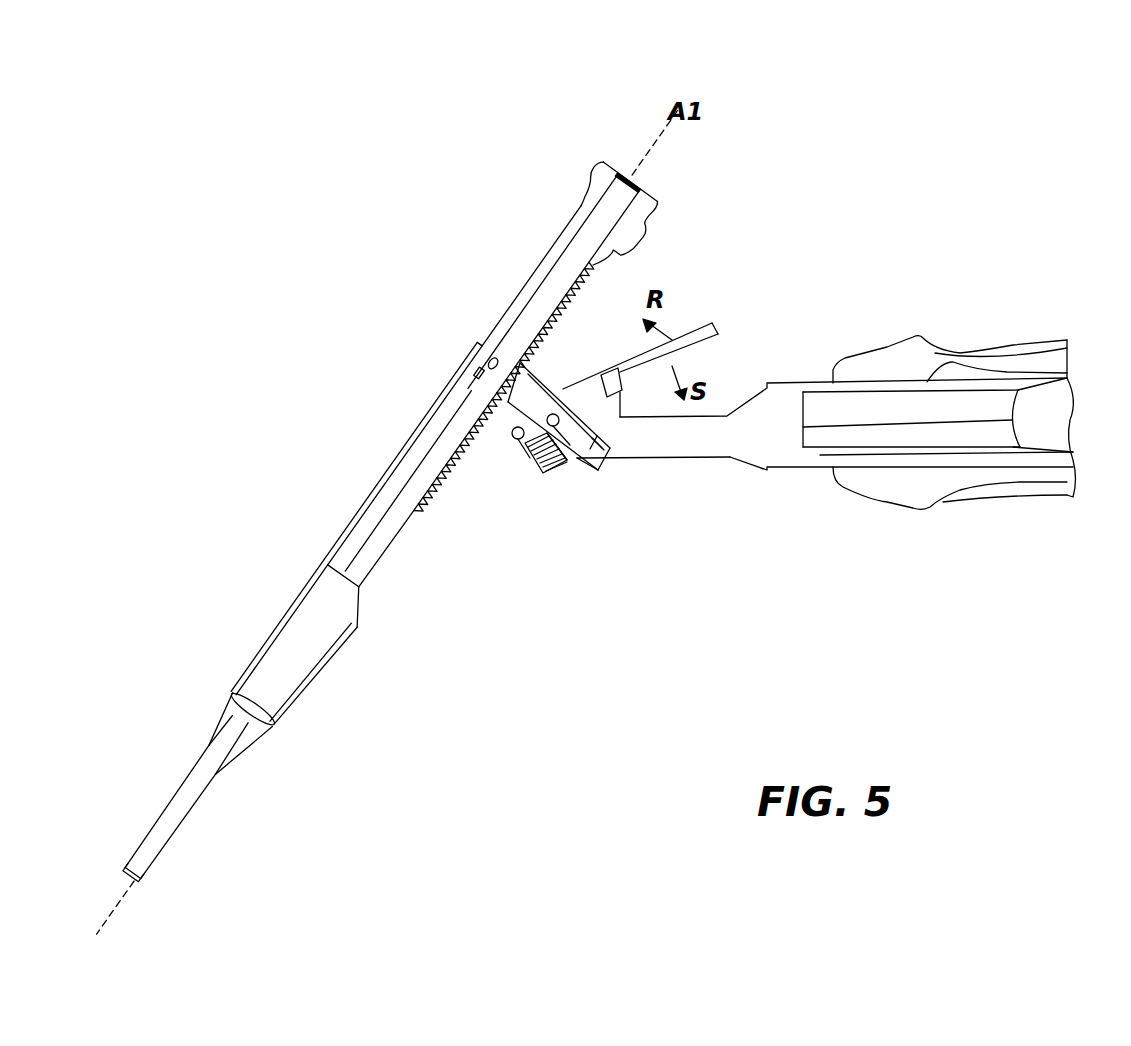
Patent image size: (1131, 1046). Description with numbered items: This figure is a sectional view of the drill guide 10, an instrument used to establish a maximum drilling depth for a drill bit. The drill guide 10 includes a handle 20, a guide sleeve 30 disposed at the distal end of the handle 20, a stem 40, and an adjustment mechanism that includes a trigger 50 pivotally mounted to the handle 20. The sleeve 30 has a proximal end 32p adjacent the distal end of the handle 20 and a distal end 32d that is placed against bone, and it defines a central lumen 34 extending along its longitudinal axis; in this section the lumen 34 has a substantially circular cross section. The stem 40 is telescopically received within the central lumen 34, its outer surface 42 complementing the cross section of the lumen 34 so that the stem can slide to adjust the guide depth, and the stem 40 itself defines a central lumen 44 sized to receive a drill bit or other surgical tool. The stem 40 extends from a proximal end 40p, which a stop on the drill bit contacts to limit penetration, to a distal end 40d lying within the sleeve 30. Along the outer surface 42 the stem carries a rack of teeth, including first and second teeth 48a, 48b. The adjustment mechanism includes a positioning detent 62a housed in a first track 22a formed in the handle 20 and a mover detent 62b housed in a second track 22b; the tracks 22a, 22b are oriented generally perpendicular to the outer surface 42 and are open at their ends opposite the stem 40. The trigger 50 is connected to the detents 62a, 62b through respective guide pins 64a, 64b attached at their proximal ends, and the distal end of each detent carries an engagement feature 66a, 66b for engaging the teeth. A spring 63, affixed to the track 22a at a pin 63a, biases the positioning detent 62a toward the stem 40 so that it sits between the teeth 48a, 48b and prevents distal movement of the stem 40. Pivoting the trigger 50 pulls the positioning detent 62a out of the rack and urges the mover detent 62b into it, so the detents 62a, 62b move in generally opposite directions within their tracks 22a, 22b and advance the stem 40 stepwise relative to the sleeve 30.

The drill guide 10 is at (315, 436).
The handle 20 is at (885, 365).
The first track 22a is at (565, 480).
The second track 22b is at (623, 457).
The guide sleeve 30 is at (225, 722).
The distal end of the sleeve 32d is at (155, 883).
The proximal end of the sleeve 32p is at (480, 345).
The central lumen 34 is at (325, 590).
The stem 40 is at (583, 203).
The proximal end of the stem 40p is at (612, 152).
The distal end of tube 40d is at (357, 623).
The outer surface 42 is at (543, 260).
The central lumen 44 is at (422, 460).
The first tooth 48a is at (480, 373).
The second tooth 48b is at (492, 362).
The trigger 50 is at (693, 323).
The positioning detent 62a is at (507, 453).
The mover detent 62b is at (580, 470).
The spring 63 is at (555, 470).
The pin 63a is at (558, 475).
The guide pin 64a is at (530, 437).
The guide pin 64b is at (592, 455).
The engagement feature 66a is at (512, 440).
The engagement feature 66b is at (563, 390).